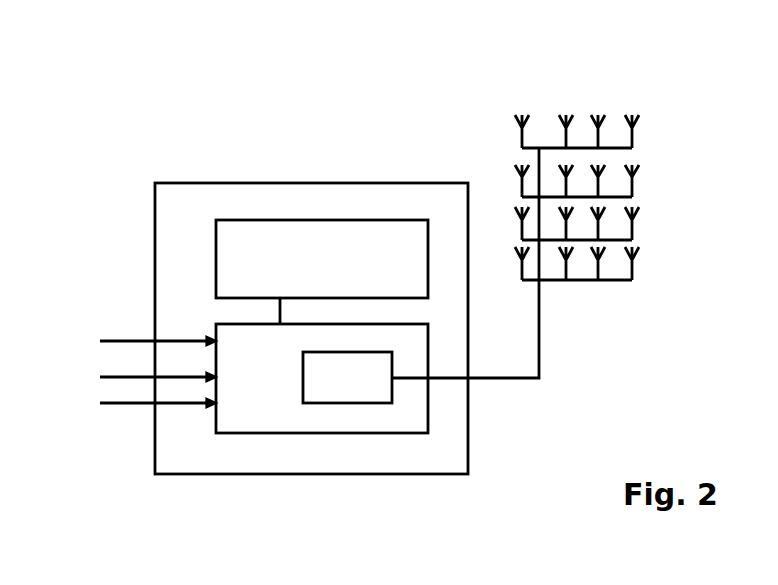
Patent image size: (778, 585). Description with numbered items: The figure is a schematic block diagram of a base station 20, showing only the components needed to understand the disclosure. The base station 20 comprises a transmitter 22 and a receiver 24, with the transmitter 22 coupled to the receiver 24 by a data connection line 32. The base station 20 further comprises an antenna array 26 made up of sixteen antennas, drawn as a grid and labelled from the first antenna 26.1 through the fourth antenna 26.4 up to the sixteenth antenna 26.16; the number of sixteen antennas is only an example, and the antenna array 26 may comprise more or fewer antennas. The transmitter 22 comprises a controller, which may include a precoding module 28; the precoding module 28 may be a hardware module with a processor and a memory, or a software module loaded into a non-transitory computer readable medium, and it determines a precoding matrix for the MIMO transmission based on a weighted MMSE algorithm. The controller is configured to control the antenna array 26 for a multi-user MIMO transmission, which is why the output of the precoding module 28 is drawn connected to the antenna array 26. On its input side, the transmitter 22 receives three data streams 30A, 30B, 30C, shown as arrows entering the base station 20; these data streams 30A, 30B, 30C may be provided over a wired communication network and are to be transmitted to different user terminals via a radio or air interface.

The base station 20 is at (442, 477).
The transmitter 22 is at (258, 417).
The receiver 24 is at (327, 245).
The antenna array 26 is at (621, 184).
The antenna 26.1 is at (530, 257).
The antenna 26.4 is at (638, 258).
The antenna 26.16 is at (638, 125).
The precoding module 28 is at (350, 390).
The data stream 30A is at (130, 404).
The data stream 30B is at (110, 378).
The data stream 30C is at (110, 342).
The data connection line 32 is at (280, 316).